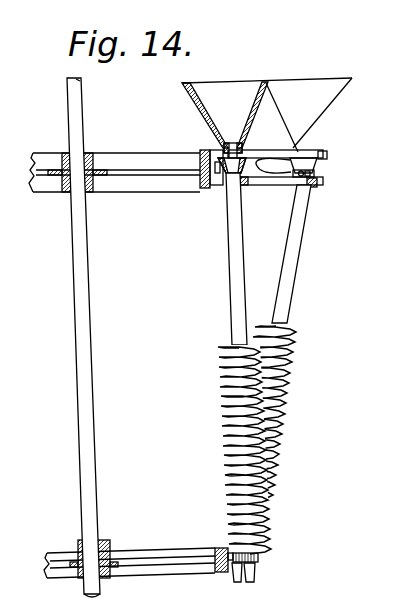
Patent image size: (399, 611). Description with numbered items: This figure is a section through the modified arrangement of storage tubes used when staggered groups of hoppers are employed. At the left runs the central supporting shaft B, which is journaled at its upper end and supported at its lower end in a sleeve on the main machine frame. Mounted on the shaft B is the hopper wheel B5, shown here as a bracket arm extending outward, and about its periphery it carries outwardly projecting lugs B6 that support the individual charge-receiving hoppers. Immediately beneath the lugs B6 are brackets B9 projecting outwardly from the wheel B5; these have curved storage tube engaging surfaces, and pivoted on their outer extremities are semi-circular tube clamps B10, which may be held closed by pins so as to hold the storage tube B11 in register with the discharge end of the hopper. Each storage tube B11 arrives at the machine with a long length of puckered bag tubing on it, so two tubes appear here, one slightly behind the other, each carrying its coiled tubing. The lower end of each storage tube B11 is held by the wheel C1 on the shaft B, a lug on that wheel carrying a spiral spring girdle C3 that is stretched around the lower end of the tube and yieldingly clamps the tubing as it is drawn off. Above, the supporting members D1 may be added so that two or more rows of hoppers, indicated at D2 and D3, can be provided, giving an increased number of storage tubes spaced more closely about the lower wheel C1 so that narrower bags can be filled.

The central supporting shaft B is at (94, 329).
The hopper wheel B5 is at (127, 192).
The outwardly projecting lugs B6 is at (215, 147).
The brackets B9 is at (220, 188).
The semi-circular tube clamps B10 is at (320, 183).
The storage tube B11 is at (312, 312).
The wheel C1 is at (138, 557).
The spiral spring girdle C3 is at (262, 558).
The supporting members D1 is at (263, 150).
The row of hoppers D2 is at (337, 108).
The row of hoppers D3 is at (187, 95).